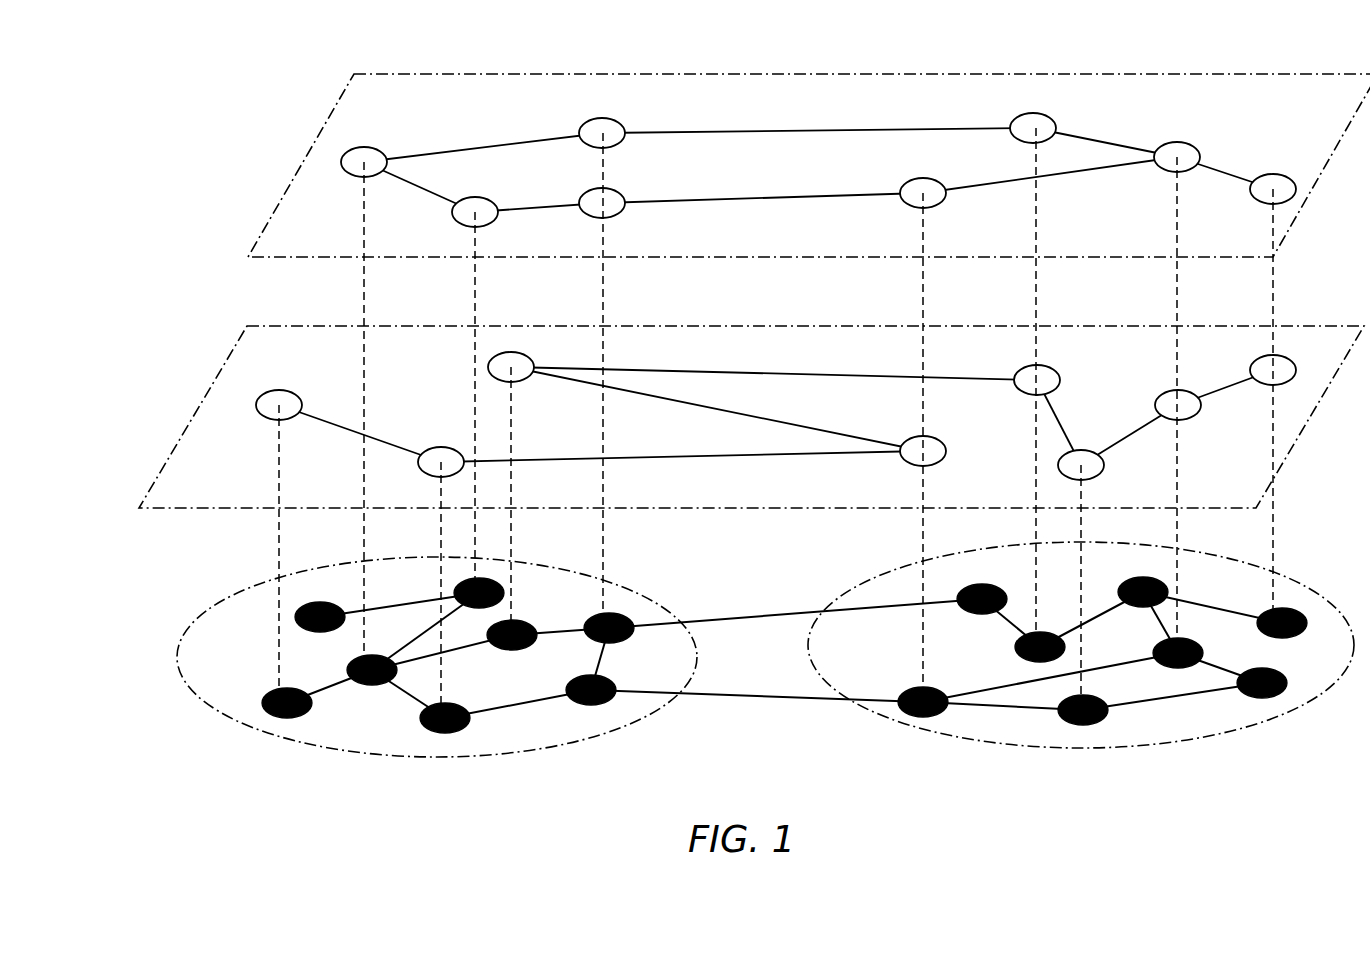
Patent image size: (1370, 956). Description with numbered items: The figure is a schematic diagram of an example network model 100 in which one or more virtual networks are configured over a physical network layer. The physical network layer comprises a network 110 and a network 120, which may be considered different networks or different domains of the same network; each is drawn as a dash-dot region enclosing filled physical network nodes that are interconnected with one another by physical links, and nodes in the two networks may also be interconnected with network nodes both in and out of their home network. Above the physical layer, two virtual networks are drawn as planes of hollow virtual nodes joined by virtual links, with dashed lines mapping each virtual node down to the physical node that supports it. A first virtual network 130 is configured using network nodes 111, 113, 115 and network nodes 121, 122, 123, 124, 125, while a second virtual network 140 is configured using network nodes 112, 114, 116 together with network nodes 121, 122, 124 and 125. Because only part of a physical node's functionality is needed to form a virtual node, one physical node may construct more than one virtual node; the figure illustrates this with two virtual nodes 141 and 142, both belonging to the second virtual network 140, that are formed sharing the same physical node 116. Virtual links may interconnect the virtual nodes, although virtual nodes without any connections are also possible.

The network model 100 is at (205, 123).
The network 110 is at (579, 680).
The network node 111 is at (299, 714).
The network node 112 is at (372, 685).
The network node 113 is at (460, 727).
The network node 114 is at (496, 588).
The network node 115 is at (516, 649).
The physical node 116 is at (626, 634).
The network 120 is at (1081, 673).
The network node 121 is at (939, 710).
The network node 122 is at (1021, 648).
The network node 123 is at (1099, 718).
The network node 124 is at (1166, 664).
The network node 125 is at (1296, 634).
The first virtual network 130 is at (751, 417).
The second virtual network 140 is at (809, 165).
The virtual node 141 is at (620, 197).
The virtual node 142 is at (620, 126).